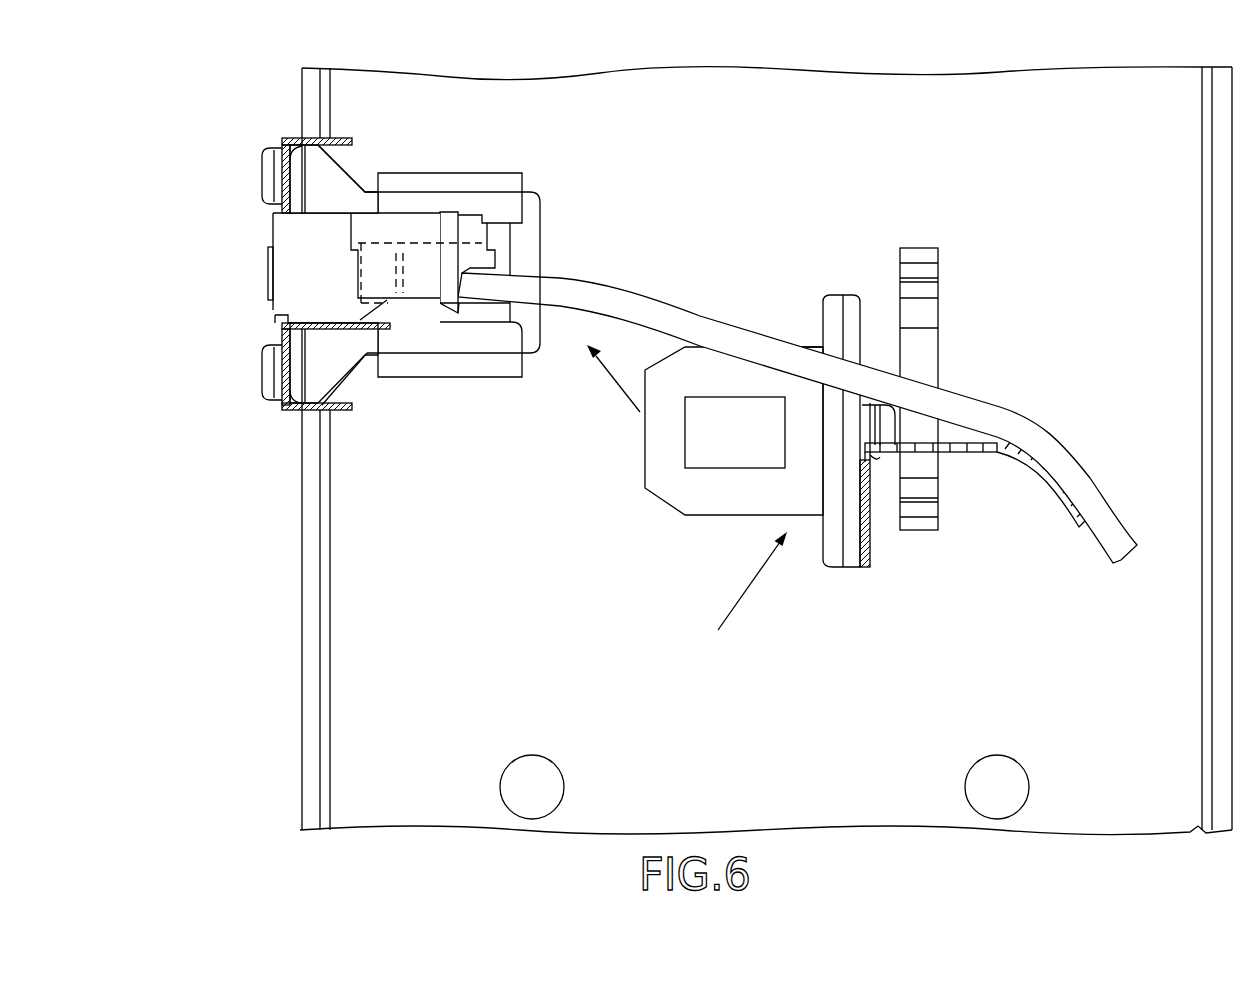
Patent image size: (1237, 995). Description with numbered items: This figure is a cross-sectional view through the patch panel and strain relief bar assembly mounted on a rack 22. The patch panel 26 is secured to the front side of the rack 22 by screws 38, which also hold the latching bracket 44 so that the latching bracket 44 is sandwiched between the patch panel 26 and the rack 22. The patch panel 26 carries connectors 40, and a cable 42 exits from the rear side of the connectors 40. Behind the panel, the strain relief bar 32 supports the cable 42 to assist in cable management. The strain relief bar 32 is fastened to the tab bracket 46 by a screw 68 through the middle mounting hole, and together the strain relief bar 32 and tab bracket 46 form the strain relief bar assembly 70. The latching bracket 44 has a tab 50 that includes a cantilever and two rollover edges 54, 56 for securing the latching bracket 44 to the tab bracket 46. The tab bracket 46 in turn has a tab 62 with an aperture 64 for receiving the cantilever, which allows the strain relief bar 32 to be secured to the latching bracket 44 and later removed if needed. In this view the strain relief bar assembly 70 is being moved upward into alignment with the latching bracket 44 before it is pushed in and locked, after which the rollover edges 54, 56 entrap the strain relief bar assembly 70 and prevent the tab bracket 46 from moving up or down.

The rack 22 is at (383, 70).
The patch panel 26 is at (280, 327).
The strain relief bar 32 is at (997, 452).
The screws 38 is at (262, 173).
The connectors 40 is at (272, 232).
The cable 42 is at (1063, 443).
The latching bracket 44 is at (352, 365).
The tab bracket 46 is at (833, 567).
The tab 50 is at (541, 210).
The rollover edge 54 is at (444, 172).
The rollover edge 56 is at (478, 377).
The tab 62 is at (645, 473).
The aperture 64 is at (720, 437).
The screw 68 is at (875, 460).
The strain relief bar assembly 70 is at (737, 599).